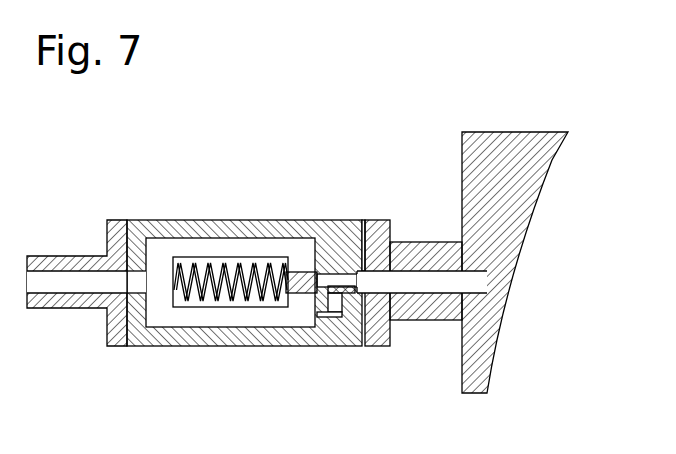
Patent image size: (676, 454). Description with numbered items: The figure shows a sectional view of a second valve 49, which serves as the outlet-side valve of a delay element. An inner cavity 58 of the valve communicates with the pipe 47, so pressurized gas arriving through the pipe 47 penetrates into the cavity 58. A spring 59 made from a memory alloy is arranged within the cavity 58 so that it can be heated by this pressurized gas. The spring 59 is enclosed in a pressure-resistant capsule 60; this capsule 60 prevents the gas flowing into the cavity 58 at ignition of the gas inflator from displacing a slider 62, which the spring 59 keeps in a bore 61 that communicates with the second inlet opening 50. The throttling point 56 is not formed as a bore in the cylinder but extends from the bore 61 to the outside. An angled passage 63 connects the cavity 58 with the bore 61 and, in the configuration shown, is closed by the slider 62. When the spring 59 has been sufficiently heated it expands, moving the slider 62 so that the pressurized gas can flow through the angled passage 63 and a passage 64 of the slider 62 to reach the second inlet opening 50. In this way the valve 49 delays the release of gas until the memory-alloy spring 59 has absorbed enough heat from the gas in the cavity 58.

The pipe 47 is at (57, 280).
The second valve 49 is at (198, 370).
The second inlet opening 50 is at (420, 283).
The throttling point 56 is at (360, 235).
The inner cavity 58 is at (153, 250).
The spring 59 is at (211, 272).
The pressure-resistant capsule 60 is at (258, 257).
The bore 61 is at (372, 292).
The slider 62 is at (300, 292).
The angled passage 63 is at (335, 318).
The passage of the slider 64 is at (368, 295).